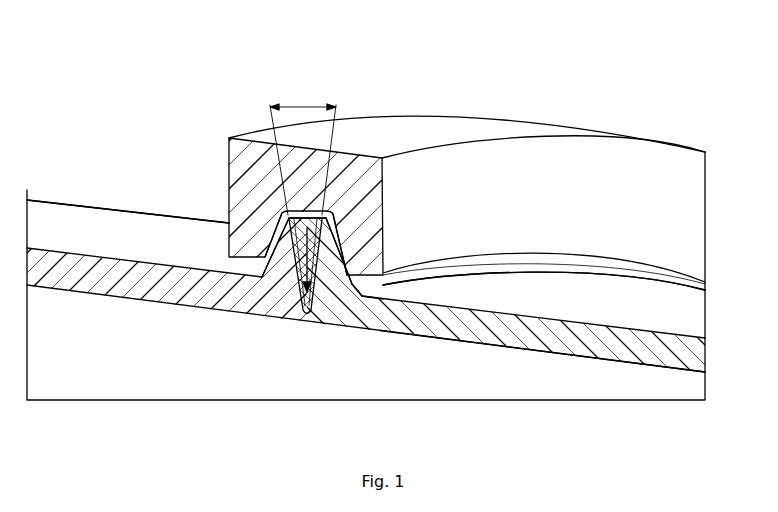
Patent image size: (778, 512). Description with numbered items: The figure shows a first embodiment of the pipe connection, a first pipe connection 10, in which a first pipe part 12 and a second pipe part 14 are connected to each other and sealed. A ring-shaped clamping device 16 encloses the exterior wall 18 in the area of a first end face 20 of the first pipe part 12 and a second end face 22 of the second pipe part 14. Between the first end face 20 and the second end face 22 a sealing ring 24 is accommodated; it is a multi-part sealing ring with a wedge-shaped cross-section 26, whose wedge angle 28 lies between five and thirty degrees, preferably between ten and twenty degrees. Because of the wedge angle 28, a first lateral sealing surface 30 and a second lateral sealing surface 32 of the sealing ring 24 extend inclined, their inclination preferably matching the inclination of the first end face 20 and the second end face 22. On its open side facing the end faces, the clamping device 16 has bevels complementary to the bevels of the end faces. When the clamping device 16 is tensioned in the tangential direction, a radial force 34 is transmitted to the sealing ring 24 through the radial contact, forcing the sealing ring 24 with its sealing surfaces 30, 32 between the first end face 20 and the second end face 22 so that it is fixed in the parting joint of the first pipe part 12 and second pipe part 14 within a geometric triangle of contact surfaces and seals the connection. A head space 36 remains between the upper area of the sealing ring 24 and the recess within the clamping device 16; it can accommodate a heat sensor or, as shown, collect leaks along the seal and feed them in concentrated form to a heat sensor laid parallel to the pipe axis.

The first pipe connection 10 is at (197, 115).
The first pipe part 12 is at (111, 298).
The second pipe part 14 is at (497, 349).
The ring-shaped clamping device 16 is at (488, 112).
The exterior wall 18 is at (113, 230).
The first end face 20 is at (270, 232).
The second end face 22 is at (350, 240).
The sealing ring 24 is at (303, 322).
The wedge-shaped cross-section 26 is at (292, 210).
The wedge angle 28 is at (299, 106).
The first lateral sealing surface 30 is at (292, 293).
The second lateral sealing surface 32 is at (326, 306).
The radial force 34 is at (343, 315).
The head space 36 is at (270, 219).